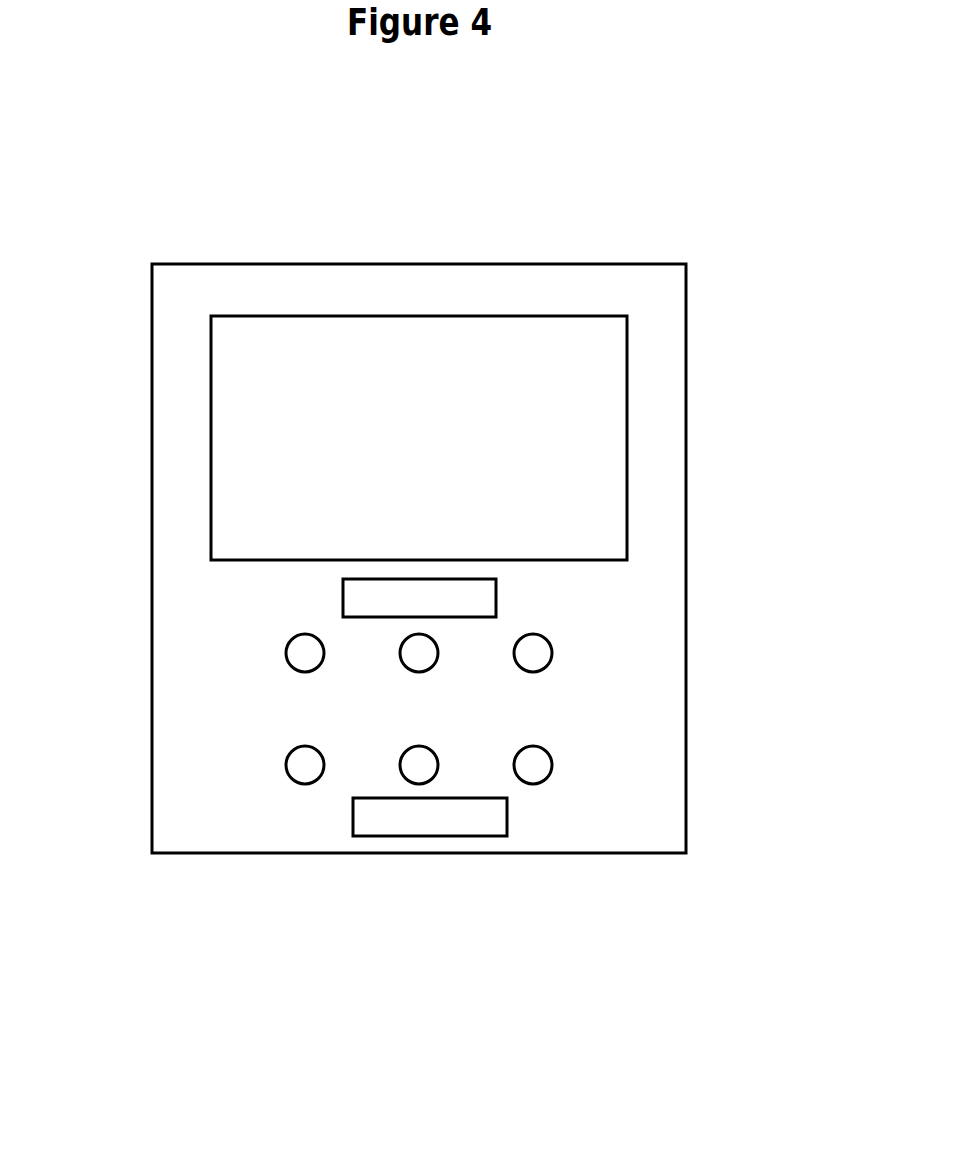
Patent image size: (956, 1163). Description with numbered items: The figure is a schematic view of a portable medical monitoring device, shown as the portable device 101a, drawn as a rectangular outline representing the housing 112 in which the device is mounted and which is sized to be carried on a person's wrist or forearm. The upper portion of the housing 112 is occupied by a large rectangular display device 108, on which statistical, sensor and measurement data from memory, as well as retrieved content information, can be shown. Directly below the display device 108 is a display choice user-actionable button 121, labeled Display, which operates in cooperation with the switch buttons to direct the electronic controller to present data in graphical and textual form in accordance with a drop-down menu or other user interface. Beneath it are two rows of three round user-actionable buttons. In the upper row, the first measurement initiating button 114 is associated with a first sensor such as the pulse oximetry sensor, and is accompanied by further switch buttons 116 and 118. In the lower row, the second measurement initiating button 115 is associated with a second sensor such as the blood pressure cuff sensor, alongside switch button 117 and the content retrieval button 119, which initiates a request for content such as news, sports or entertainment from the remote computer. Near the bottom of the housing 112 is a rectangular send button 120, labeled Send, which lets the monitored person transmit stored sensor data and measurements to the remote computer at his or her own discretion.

The portable device 101a is at (748, 319).
The housing 112 is at (196, 294).
The display device 108 is at (627, 437).
The display choice user-actionable button 121 is at (496, 596).
The send button 120 is at (478, 836).
The first measurement initiating button 114 is at (286, 653).
The user-actionable button 116 is at (435, 661).
The user-actionable button 118 is at (552, 653).
The second measurement initiating button 115 is at (306, 784).
The user-actionable button 117 is at (409, 781).
The content retrieval button 119 is at (537, 784).